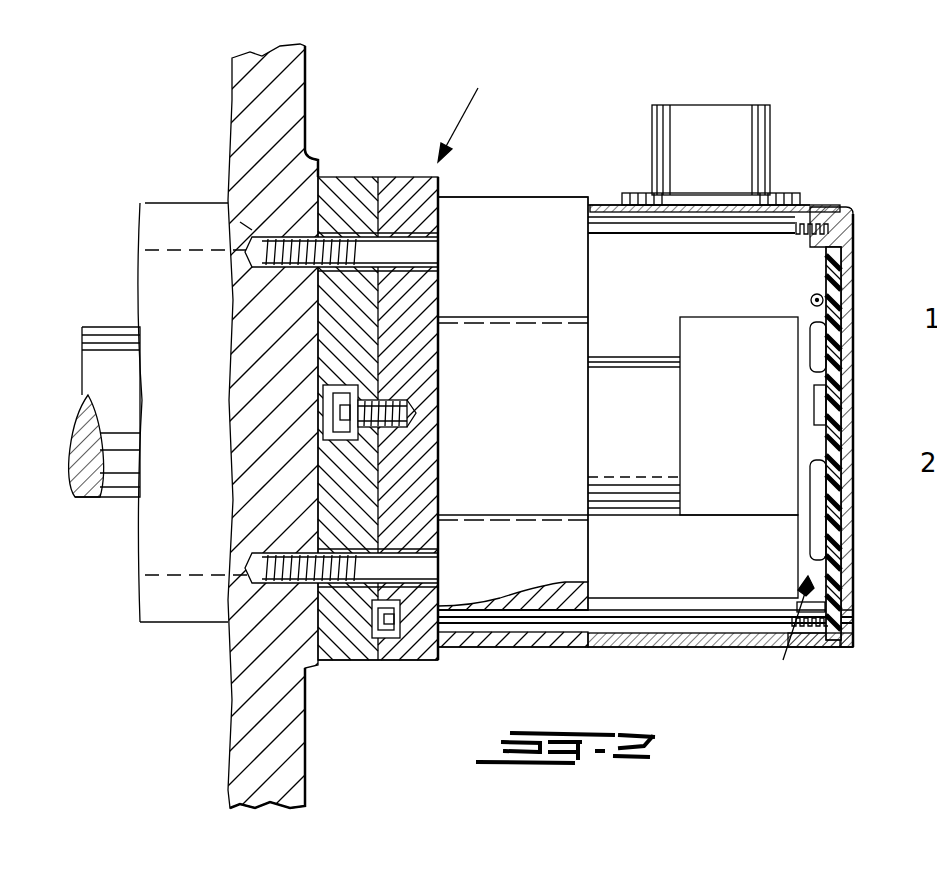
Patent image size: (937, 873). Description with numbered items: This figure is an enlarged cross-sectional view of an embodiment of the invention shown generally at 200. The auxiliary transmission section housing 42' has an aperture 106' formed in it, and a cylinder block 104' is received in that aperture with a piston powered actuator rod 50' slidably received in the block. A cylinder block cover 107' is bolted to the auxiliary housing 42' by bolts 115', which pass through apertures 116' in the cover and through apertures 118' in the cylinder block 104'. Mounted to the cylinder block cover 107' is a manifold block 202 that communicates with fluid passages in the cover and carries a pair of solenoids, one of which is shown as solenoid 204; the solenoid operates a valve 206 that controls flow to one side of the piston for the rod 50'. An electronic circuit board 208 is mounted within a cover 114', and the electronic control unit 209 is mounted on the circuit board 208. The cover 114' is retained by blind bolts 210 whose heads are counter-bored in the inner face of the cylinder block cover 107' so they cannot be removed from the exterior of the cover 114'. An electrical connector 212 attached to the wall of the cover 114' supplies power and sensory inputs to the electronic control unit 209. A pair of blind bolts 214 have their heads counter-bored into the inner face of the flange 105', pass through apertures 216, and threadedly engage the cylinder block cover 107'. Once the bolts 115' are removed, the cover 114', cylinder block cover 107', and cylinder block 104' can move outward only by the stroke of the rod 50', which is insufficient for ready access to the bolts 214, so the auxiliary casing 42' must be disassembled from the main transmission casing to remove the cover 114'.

The auxiliary transmission section housing 42' is at (308, 426).
The piston powered actuator rod 50' is at (101, 435).
The cylinder block 104' is at (224, 440).
The flange 105' is at (377, 689).
The aperture 106' is at (231, 201).
The cylinder block cover 107' is at (645, 400).
The cover 114' is at (862, 412).
The bolts 115' is at (406, 409).
The apertures 116' is at (417, 410).
The apertures 118' is at (386, 430).
The embodiment of the invention 200 is at (477, 106).
The manifold block 202 is at (708, 600).
The solenoid 204 is at (760, 318).
The valve 206 is at (612, 357).
The electronic circuit board 208 is at (817, 288).
The electronic control unit 209 is at (783, 660).
The blind bolts 210 is at (634, 235).
The electrical connector 212 is at (770, 132).
The blind bolts 214 is at (330, 428).
The apertures 216 is at (412, 418).